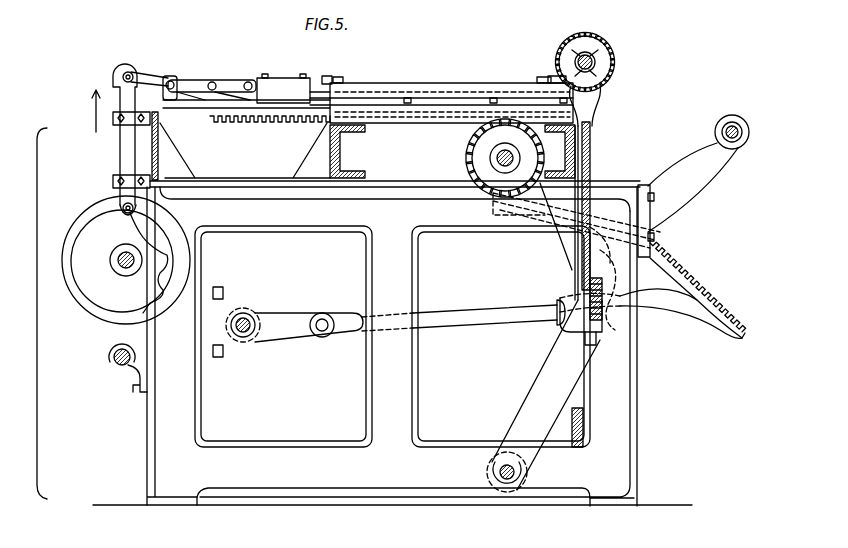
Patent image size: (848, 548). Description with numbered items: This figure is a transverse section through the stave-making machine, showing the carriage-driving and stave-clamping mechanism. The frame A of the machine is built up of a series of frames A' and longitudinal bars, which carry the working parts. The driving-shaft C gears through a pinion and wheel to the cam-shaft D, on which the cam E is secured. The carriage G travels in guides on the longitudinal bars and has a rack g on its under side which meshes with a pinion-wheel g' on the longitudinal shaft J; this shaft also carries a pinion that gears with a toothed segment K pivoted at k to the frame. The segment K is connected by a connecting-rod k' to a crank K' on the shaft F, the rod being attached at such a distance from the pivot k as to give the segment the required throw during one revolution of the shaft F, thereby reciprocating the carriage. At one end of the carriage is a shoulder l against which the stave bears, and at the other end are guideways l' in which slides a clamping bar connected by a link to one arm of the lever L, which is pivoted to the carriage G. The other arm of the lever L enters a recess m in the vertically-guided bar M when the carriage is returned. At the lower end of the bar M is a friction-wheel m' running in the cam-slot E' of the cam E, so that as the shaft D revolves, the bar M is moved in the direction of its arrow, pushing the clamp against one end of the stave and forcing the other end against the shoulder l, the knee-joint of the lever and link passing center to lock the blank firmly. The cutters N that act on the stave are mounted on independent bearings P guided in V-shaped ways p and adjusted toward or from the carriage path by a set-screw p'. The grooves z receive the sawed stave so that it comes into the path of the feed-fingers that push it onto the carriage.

The frame A is at (30, 313).
The frames A' is at (392, 309).
The vertically-guided bar M is at (122, 148).
The recess m is at (109, 73).
The friction-wheel m' is at (111, 198).
The lever L is at (154, 78).
The guideways l' is at (283, 88).
The shoulder l is at (553, 69).
The grooves z is at (442, 69).
The carriage G is at (283, 80).
The rack g is at (270, 127).
The pinion-wheel g' is at (552, 234).
The longitudinal shaft J is at (505, 150).
The cutters N is at (612, 66).
The bearings P is at (600, 108).
The V-shaped ways p is at (596, 211).
The set-screw p' is at (593, 311).
The segment K is at (620, 302).
The pivot k is at (495, 472).
The connecting-rod k' is at (463, 311).
The crank K' is at (309, 316).
The shaft F is at (243, 313).
The cam E is at (122, 260).
The cam-slot E' is at (106, 261).
The cam-shaft D is at (126, 250).
The driving-shaft C is at (126, 369).